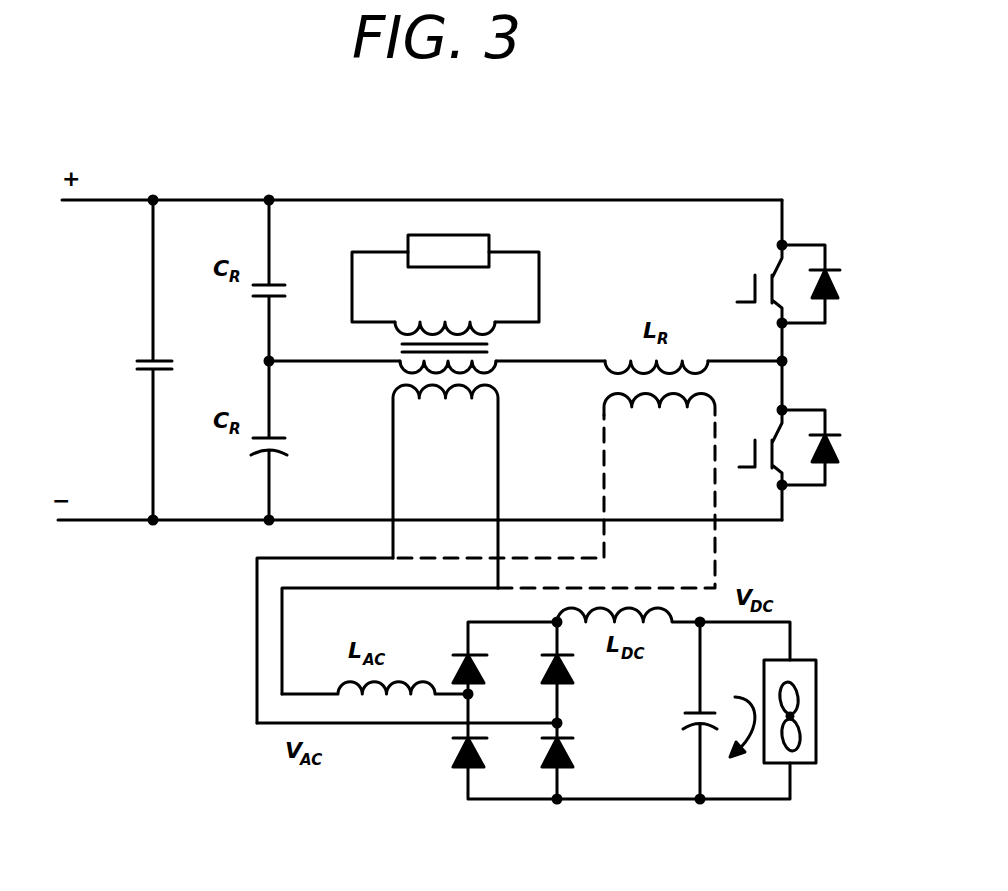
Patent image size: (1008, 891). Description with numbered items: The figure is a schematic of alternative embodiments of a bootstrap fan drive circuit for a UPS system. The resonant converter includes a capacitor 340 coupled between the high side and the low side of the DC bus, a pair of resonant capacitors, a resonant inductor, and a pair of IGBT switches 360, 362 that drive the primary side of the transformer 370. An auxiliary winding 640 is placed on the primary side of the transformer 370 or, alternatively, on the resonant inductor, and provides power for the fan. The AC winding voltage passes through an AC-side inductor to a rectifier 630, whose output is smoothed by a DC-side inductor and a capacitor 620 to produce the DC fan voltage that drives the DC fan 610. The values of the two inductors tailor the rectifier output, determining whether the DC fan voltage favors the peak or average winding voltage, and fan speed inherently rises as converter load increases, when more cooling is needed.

The capacitor 340 is at (150, 358).
The IGBT switch 360 is at (852, 272).
The IGBT switch 362 is at (853, 437).
The transformer 370 is at (500, 342).
The auxiliary winding 640 is at (393, 412).
The rectifier 630 is at (638, 690).
The capacitor 620 is at (697, 730).
The DC fan 610 is at (815, 682).